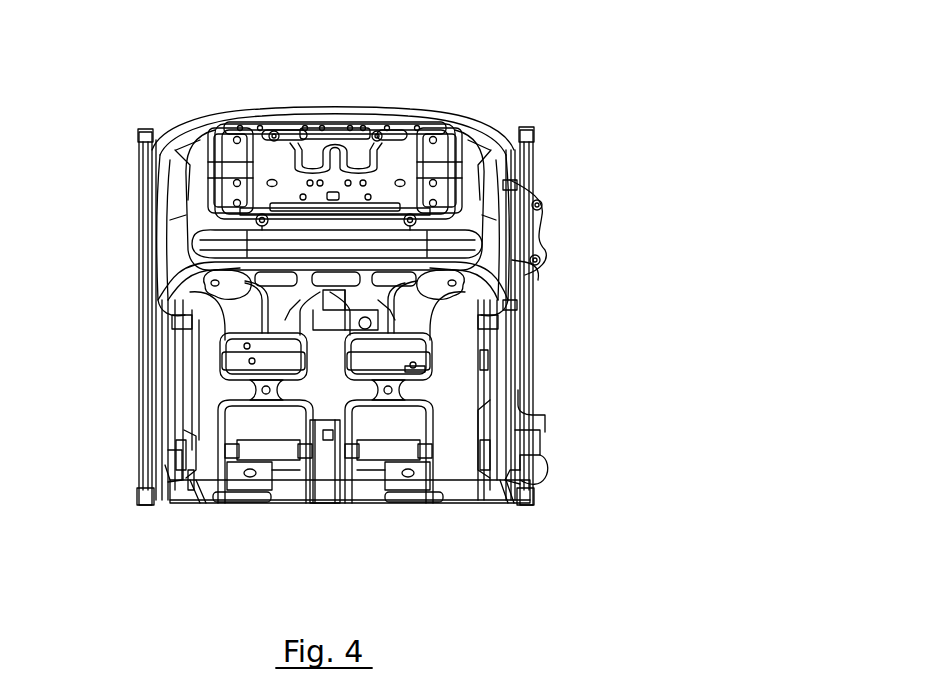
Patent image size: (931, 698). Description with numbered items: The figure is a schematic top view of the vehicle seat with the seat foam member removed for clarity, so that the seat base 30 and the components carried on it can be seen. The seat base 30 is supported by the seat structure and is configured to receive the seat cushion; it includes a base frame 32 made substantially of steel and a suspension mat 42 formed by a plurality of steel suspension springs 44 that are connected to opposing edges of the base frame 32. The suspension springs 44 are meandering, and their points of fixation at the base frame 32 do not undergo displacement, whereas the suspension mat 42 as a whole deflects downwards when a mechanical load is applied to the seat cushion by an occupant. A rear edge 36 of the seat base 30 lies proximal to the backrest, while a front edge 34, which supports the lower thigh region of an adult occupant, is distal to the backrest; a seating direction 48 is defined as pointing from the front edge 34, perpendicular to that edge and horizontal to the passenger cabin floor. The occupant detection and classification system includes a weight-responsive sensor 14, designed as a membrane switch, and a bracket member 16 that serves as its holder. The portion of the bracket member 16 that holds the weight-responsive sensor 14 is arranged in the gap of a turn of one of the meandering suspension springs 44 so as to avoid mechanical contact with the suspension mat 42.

The weight-responsive sensor 14 is at (374, 323).
The bracket member 16 is at (312, 323).
The seat base 30 is at (542, 147).
The base frame 32 is at (506, 375).
The front edge 34 is at (458, 114).
The rear edge 36 is at (287, 510).
The suspension mat 42 is at (200, 392).
The suspension springs 44 is at (435, 422).
The seating direction 48 is at (335, 108).